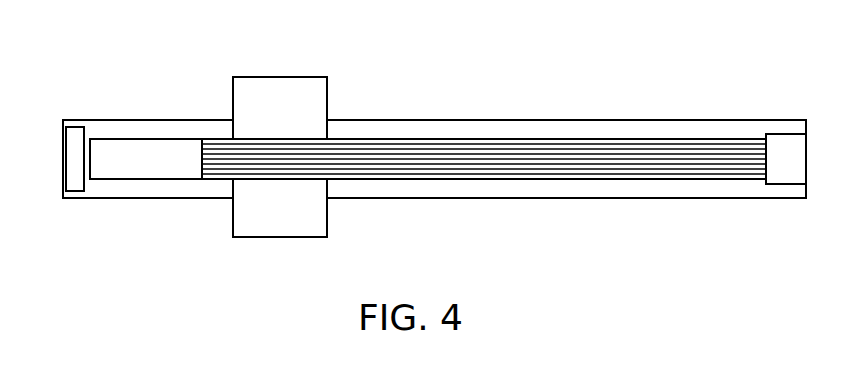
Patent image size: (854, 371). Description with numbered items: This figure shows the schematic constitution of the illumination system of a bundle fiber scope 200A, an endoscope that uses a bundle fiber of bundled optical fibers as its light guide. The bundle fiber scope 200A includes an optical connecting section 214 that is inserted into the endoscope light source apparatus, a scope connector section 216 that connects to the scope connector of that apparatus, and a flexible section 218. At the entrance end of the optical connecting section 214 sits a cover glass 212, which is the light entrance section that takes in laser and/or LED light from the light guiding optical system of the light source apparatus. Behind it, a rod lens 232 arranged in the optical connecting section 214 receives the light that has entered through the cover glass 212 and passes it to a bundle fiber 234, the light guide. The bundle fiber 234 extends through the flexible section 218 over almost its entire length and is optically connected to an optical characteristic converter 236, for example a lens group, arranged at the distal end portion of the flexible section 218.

The bundle fiber scope 200A is at (655, 98).
The cover glass 212 is at (63, 179).
The optical connecting section 214 is at (150, 118).
The scope connector section 216 is at (279, 77).
The flexible section 218 is at (513, 118).
The rod lens 232 is at (147, 180).
The bundle fiber 234 is at (560, 180).
The optical characteristic converter 236 is at (787, 184).